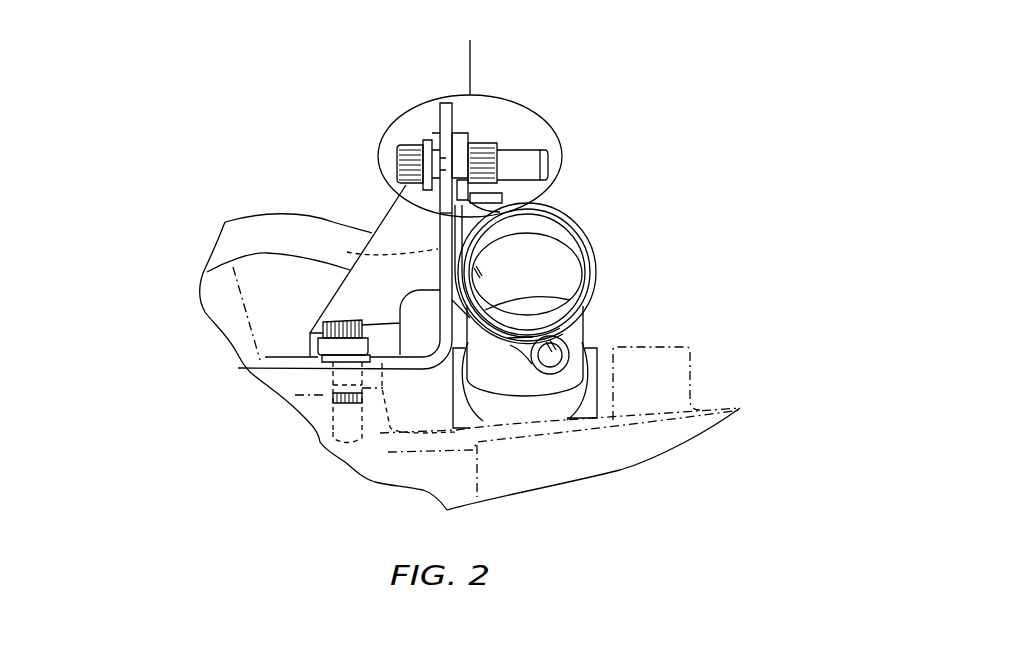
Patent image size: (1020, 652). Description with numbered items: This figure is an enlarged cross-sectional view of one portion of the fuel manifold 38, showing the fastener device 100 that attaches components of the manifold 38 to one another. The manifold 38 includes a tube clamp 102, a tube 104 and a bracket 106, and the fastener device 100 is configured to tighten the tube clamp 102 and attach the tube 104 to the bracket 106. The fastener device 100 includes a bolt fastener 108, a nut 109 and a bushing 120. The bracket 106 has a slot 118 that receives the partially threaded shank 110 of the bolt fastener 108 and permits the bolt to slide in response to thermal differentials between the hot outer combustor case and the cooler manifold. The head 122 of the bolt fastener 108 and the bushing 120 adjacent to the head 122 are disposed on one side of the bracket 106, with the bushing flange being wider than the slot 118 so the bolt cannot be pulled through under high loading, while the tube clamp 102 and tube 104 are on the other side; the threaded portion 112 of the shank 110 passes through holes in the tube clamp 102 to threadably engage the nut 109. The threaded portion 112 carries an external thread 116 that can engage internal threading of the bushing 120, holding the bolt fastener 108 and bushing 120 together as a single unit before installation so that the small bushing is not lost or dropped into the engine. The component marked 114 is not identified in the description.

The fuel manifold 38 is at (125, 181).
The fastener device 100 is at (388, 118).
The tube clamp 102 is at (585, 237).
The tube 104 is at (583, 250).
The bracket 106 is at (347, 252).
The bolt fastener 108 is at (397, 170).
The nut 109 is at (481, 140).
The partially threaded shank 110 is at (522, 148).
The threaded portion 112 is at (546, 150).
The lower mounting block 114 is at (433, 201).
The external thread 116 is at (552, 193).
The slot 118 is at (448, 106).
The bushing 120 is at (437, 143).
The head 122 is at (397, 152).